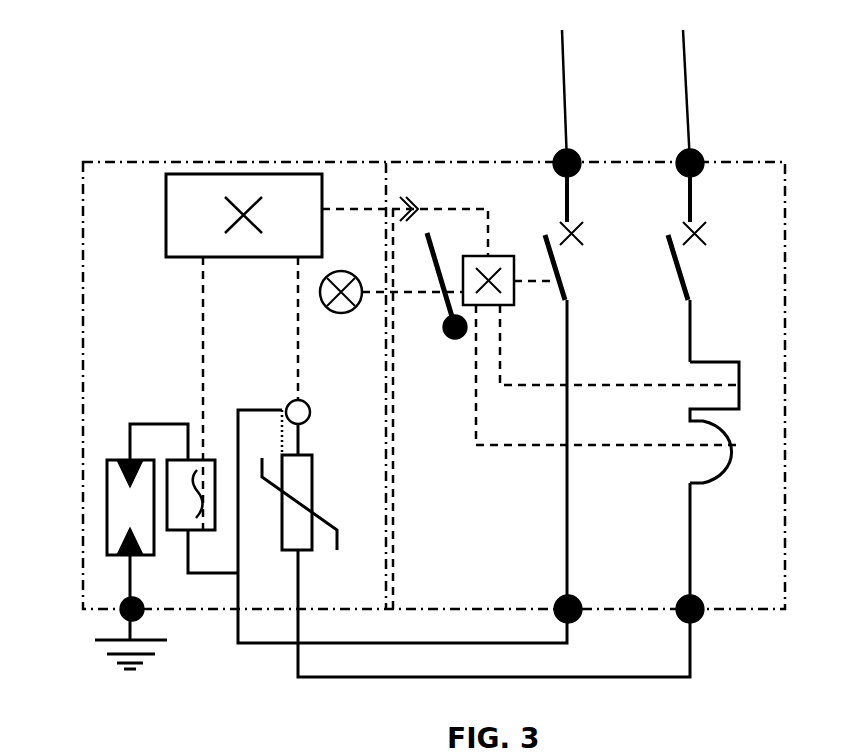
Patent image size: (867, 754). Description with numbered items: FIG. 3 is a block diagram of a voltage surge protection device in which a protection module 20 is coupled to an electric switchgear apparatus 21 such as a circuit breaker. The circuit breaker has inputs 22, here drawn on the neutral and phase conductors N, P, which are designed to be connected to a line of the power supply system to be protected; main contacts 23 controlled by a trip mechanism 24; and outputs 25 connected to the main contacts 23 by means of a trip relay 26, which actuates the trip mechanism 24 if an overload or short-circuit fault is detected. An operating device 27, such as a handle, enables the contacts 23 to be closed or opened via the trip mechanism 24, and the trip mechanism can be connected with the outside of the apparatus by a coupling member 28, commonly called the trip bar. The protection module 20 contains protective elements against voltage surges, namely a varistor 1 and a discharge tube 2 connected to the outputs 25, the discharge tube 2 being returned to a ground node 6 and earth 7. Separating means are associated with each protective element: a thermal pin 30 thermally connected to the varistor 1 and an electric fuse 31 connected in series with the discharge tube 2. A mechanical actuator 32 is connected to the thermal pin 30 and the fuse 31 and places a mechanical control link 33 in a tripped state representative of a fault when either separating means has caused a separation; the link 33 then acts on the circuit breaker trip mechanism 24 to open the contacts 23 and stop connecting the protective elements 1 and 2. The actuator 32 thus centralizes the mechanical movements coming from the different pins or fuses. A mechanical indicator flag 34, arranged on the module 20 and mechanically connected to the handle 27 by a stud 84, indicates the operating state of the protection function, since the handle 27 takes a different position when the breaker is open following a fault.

The varistor 1 is at (313, 475).
The discharge tube 2 is at (107, 490).
The ground node 6 is at (142, 611).
The ground 7 is at (128, 632).
The protection module 20 is at (212, 162).
The electric switchgear apparatus 21 is at (483, 162).
The inputs 22 is at (688, 150).
The main contacts 23 is at (688, 280).
The trip mechanism 24 is at (495, 253).
The outputs 25 is at (575, 620).
The trip relay 26 is at (708, 392).
The operating device 27 is at (442, 265).
The coupling member 28 is at (396, 207).
The thermal pin 30 is at (310, 412).
The electric fuse 31 is at (178, 462).
The mechanical actuator 32 is at (240, 174).
The mechanical control link 33 is at (345, 208).
The mechanical indicator flag 34 is at (341, 271).
The stud 84 is at (412, 293).
The neutral conductor N is at (564, 60).
The phase conductor P is at (688, 57).